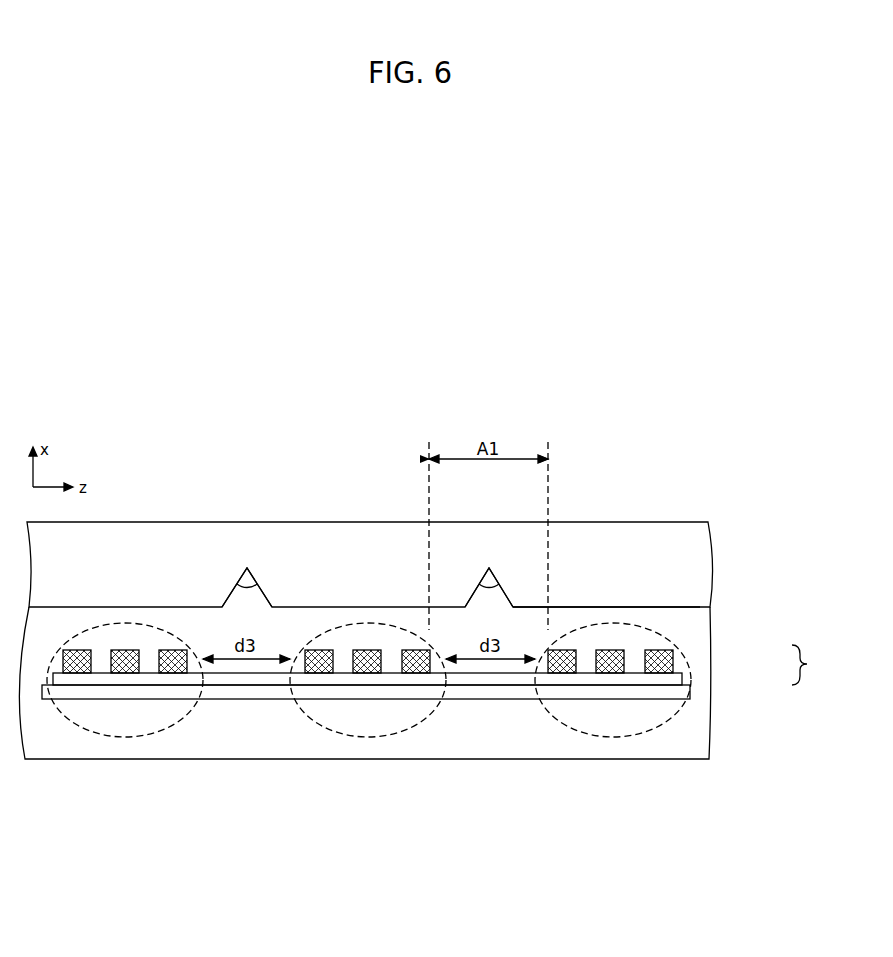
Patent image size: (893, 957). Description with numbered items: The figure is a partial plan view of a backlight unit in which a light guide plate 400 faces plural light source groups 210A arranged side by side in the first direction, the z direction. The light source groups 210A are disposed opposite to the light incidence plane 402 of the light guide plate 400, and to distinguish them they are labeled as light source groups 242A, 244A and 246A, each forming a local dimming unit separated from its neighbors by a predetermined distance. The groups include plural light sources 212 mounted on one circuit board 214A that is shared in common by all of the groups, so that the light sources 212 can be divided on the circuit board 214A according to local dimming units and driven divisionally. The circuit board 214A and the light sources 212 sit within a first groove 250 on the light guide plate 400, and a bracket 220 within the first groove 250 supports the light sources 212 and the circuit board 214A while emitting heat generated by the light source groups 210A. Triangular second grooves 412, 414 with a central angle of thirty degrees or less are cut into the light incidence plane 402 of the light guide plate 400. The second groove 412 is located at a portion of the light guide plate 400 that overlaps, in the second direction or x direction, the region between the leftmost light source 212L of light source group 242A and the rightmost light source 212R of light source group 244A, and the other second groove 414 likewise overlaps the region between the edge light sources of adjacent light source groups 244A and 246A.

The light guide plate 400 is at (708, 575).
The light incidence plane 402 is at (700, 600).
The second groove 412 is at (498, 585).
The second groove 414 is at (260, 583).
The light source 212 is at (660, 660).
The rightmost light source 212R is at (413, 665).
The leftmost light source 212L is at (560, 665).
The circuit board 214A is at (675, 679).
The light source group 210A is at (823, 665).
The bracket 220 is at (684, 693).
The first groove 250 is at (700, 742).
The light source group 242A is at (627, 737).
The light source group 244A is at (387, 737).
The light source group 246A is at (143, 737).